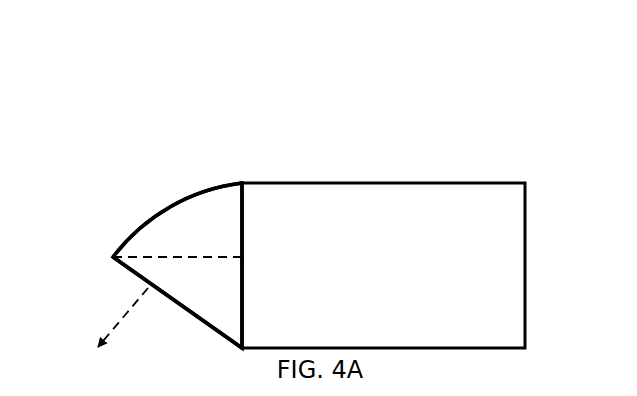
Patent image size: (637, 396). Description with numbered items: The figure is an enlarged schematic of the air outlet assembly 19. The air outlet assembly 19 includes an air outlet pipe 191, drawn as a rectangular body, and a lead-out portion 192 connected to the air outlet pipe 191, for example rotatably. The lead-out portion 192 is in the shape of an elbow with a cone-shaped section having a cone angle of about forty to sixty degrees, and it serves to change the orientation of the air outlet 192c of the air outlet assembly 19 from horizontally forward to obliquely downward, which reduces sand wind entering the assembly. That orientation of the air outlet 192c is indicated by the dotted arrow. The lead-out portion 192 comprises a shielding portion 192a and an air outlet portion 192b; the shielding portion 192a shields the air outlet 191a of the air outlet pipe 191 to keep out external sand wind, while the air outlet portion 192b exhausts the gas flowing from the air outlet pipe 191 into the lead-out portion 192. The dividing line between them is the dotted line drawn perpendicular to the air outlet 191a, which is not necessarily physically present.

The air outlet assembly 19 is at (364, 77).
The air outlet pipe 191 is at (465, 208).
The air outlet of the air outlet pipe 191a is at (244, 212).
The lead-out portion 192 is at (190, 197).
The shielding portion 192a is at (177, 220).
The air outlet portion 192b is at (178, 302).
The air outlet of the air outlet assembly 192c is at (128, 267).